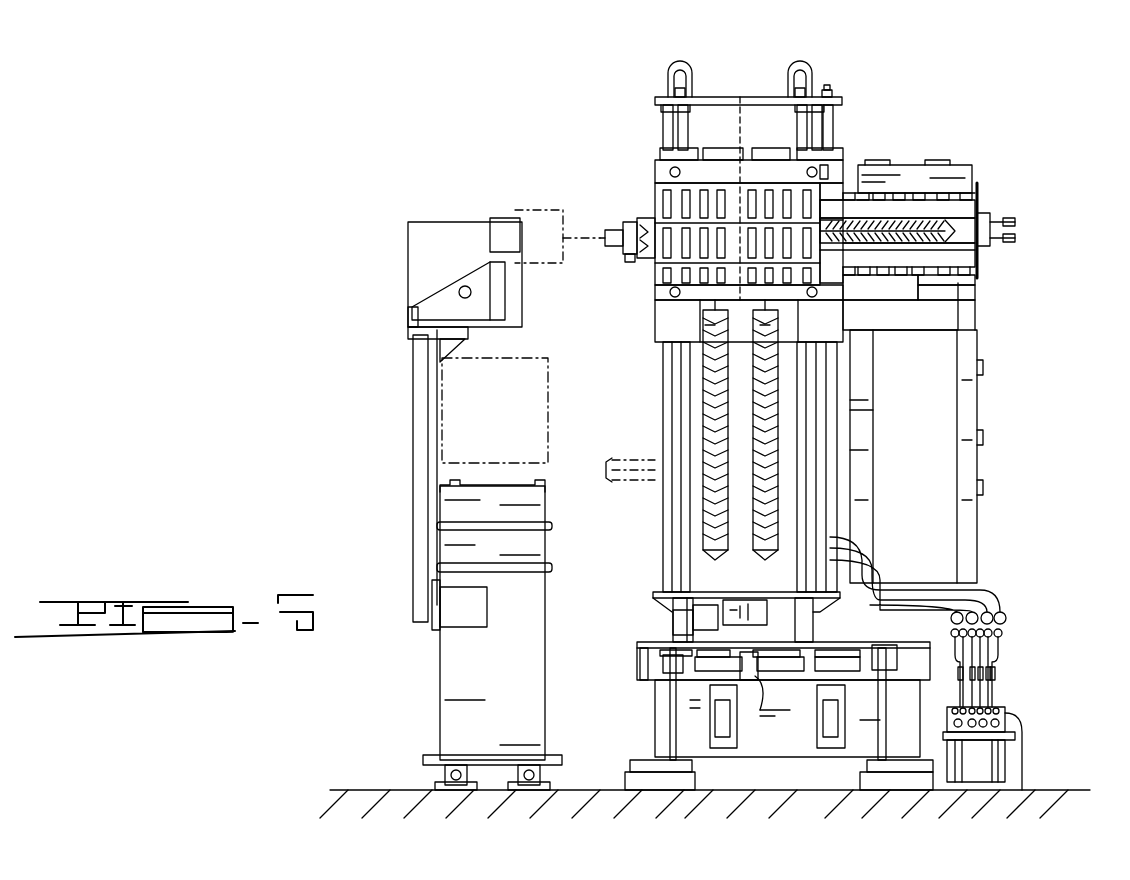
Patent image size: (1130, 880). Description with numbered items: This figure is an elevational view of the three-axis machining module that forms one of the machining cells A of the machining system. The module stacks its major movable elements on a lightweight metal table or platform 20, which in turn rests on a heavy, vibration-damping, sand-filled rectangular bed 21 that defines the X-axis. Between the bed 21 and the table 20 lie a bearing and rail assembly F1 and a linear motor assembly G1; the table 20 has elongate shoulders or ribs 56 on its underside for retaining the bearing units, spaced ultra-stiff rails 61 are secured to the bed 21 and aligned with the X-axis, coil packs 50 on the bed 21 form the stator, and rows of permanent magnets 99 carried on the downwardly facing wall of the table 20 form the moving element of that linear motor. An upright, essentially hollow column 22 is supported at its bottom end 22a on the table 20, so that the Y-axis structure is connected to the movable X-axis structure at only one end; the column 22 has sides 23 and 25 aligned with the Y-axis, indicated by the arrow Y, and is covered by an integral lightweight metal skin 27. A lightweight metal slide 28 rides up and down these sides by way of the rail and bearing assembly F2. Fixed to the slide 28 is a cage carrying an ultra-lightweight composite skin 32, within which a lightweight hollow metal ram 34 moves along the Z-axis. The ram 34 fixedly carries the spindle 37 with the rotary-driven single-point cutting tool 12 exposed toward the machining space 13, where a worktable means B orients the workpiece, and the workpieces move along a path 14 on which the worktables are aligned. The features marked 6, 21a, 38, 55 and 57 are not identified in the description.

The single-point rotary cutting tool 12 is at (618, 225).
The machining space 13 is at (442, 408).
The path 14 is at (405, 275).
The table or platform 20 is at (655, 640).
The bed 21 is at (800, 735).
The guide portion 21a is at (768, 711).
The column 22 is at (822, 462).
The bottom end of column 22a is at (680, 615).
The side of column 23 is at (663, 392).
The side of column 25 is at (690, 520).
The lightweight metal skin 27 is at (845, 183).
The slide 28 is at (650, 308).
The composite skin 32 is at (940, 215).
The ram 34 is at (910, 212).
The spindle 37 is at (630, 262).
The slotted panel 38 is at (655, 300).
The coil packs 50 is at (860, 600).
The slide member 55 is at (712, 640).
The shoulders or ribs 56 is at (680, 785).
The block 57 is at (940, 576).
The rails 61 is at (676, 680).
The permanent magnets 99 is at (710, 430).
The section line 6- 6 is at (370, 265).
The Y-axis Y is at (740, 92).
The machining cell A is at (870, 800).
The worktable means B is at (440, 660).
The bearing and rail assembly F1 is at (672, 670).
The rail and bearing assembly F2 is at (800, 408).
The linear motor assembly G1 is at (760, 680).